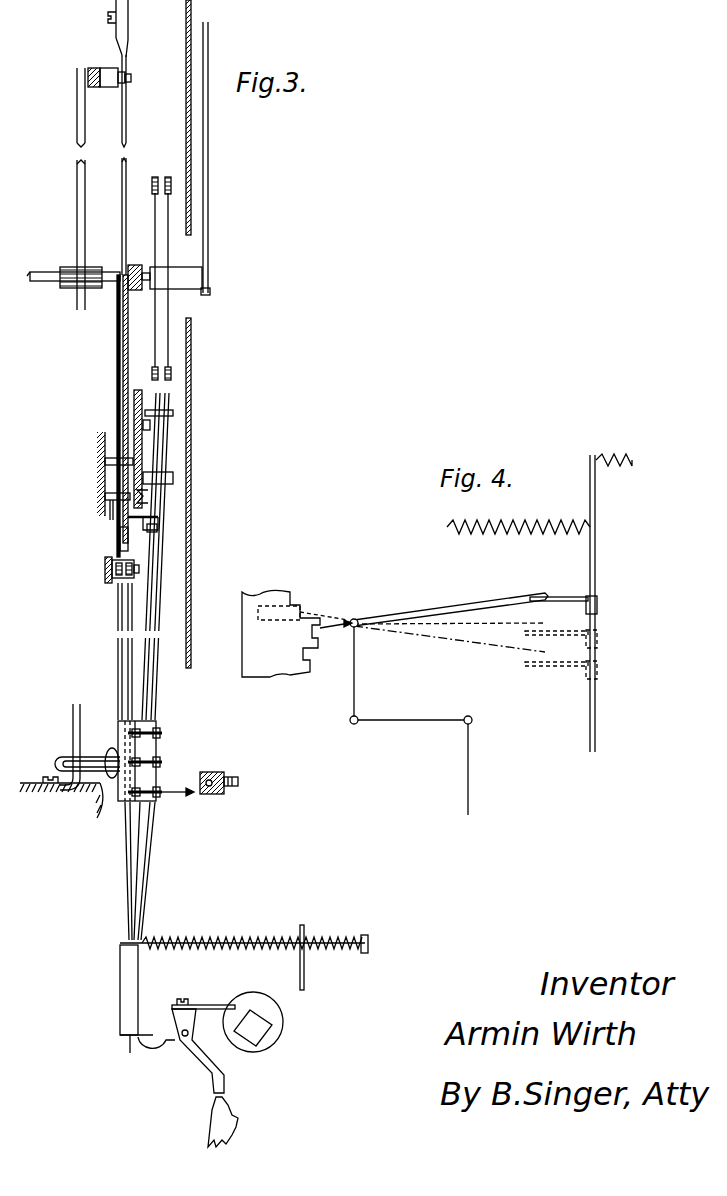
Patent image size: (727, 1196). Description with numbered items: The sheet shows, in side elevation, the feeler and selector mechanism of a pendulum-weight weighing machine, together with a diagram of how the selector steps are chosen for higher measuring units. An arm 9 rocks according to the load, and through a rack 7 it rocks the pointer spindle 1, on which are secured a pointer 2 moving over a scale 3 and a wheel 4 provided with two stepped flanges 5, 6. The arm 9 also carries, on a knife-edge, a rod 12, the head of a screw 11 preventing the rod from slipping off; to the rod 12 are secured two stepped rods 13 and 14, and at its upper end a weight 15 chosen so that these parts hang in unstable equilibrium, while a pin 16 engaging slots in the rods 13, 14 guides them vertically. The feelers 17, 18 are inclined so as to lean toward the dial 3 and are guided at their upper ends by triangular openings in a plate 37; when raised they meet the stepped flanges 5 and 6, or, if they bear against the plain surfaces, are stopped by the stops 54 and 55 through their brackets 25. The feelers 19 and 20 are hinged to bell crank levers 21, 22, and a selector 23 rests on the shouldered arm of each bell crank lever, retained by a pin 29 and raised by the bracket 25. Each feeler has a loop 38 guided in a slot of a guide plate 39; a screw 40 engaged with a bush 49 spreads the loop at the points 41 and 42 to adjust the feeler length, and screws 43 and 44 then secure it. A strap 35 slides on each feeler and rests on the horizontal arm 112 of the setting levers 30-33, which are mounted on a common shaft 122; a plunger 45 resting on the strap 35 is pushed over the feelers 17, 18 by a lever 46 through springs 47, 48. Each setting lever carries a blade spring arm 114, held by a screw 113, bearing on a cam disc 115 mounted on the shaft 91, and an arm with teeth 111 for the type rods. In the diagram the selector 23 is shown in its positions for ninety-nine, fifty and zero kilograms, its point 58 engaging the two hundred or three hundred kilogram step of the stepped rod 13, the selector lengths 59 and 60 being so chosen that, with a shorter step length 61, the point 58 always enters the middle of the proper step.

In FIG. 3, the shaft (pointer spindle) 1 is at (180, 283).
In FIG. 3, the pointer 2 is at (208, 117).
In FIG. 3, the scale 3 is at (191, 52).
In FIG. 3, the wheel 4 is at (160, 253).
In FIG. 3, the stepped flange 5 is at (155, 178).
In FIG. 3, the stepped flange 6 is at (168, 178).
In FIG. 3, the rack 7 is at (77, 143).
In FIG. 3, the arm 9 is at (93, 68).
In FIG. 3, the screw 11 is at (131, 78).
In FIG. 3, the rod 12 is at (124, 146).
In FIG. 3, the stepped rod 13 is at (128, 352).
In FIG. 4, the stepped rod 13 is at (268, 677).
In FIG. 3, the stepped rod 14 is at (116, 346).
In FIG. 3, the weight 15 is at (128, 17).
In FIG. 3, the pin 16 is at (105, 496).
In FIG. 3, the feeler 17 is at (152, 566).
In FIG. 4, the feeler 17 is at (596, 553).
In FIG. 3, the feeler 18 is at (160, 580).
In FIG. 3, the feeler 19 is at (127, 598).
In FIG. 4, the feeler 19 is at (469, 768).
In FIG. 3, the feeler 20 is at (120, 646).
In FIG. 3, the bell crank lever 21 is at (125, 553).
In FIG. 4, the bell crank lever 21 is at (403, 720).
In FIG. 3, the bell crank lever 22 is at (120, 536).
In FIG. 4, the selector 23 is at (403, 615).
In FIG. 3, the bracket 25 is at (158, 526).
In FIG. 4, the bracket 25 is at (562, 597).
In FIG. 3, the pin 29 is at (113, 458).
In FIG. 3, the setting levers 30-33 is at (210, 1062).
In FIG. 3, the strap 35 is at (125, 996).
In FIG. 3, the plate 37 is at (173, 412).
In FIG. 3, the loop 38 is at (60, 758).
In FIG. 3, the guide plate 39 is at (73, 708).
In FIG. 3, the screw 40 is at (157, 762).
In FIG. 3, the point 41 is at (114, 752).
In FIG. 3, the point 42 is at (98, 786).
In FIG. 3, the screw 43 is at (153, 742).
In FIG. 3, the screw 44 is at (160, 793).
In FIG. 3, the plunger 45 is at (141, 940).
In FIG. 3, the lever 46 is at (302, 925).
In FIG. 3, the spring 47 is at (240, 940).
In FIG. 3, the spring 48 is at (344, 950).
In FIG. 3, the bush 49 is at (138, 727).
In FIG. 3, the stop 54 is at (148, 497).
In FIG. 3, the stop 55 is at (175, 473).
In FIG. 4, the point 58 is at (318, 627).
In FIG. 4, the length 59 is at (330, 640).
In FIG. 4, the length 60 is at (456, 628).
In FIG. 4, the step length 61 is at (252, 612).
In FIG. 3, the shaft 91 is at (258, 1028).
In FIG. 3, the teeth 111 is at (240, 1132).
In FIG. 3, the arm 112 is at (152, 1046).
In FIG. 3, the screw 113 is at (185, 998).
In FIG. 3, the blade spring arm 114 is at (226, 1005).
In FIG. 3, the cam disc 115 is at (283, 1022).
In FIG. 3, the shaft 122 is at (184, 1037).